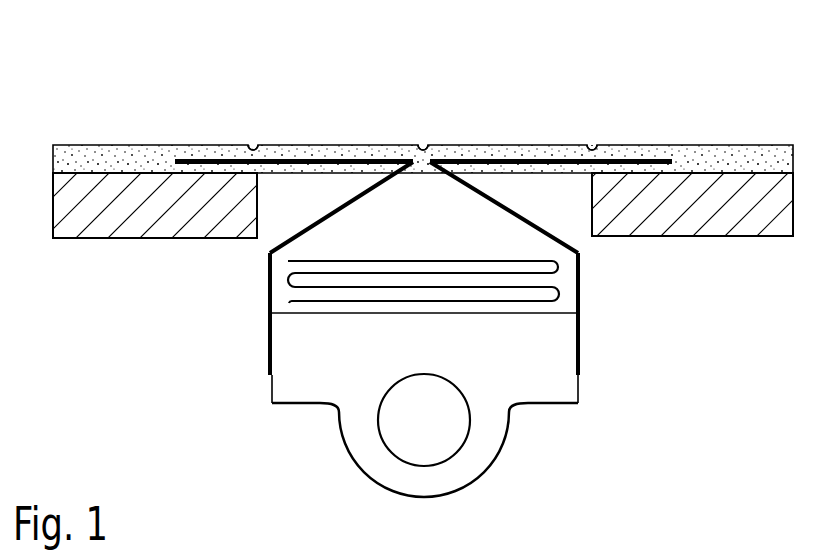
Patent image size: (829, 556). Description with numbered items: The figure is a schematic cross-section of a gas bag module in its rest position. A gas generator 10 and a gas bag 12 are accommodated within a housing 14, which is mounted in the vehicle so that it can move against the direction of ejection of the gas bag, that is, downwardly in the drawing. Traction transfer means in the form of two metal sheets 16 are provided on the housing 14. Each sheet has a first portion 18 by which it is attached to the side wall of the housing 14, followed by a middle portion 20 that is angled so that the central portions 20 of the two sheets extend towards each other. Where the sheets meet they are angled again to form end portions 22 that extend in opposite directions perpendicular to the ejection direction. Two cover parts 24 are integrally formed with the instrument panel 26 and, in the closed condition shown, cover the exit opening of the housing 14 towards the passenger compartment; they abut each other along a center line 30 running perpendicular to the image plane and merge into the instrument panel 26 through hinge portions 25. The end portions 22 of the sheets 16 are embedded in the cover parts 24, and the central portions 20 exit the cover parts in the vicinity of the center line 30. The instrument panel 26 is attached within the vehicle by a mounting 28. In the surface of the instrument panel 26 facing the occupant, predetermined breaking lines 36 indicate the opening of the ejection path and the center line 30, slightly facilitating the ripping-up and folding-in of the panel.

The gas generator 10 is at (442, 445).
The gas bag 12 is at (288, 302).
The housing 14 is at (300, 387).
The metal sheets 16 is at (270, 275).
The first portion 18 is at (268, 368).
The middle portion 20 is at (327, 146).
The end portions 22 is at (510, 146).
The cover parts 24 is at (398, 146).
The hinge portions 25 is at (592, 146).
The instrument panel 26 is at (735, 146).
The mounting 28 is at (742, 206).
The center line 30 is at (422, 166).
The predetermined breaking lines 36 is at (254, 146).